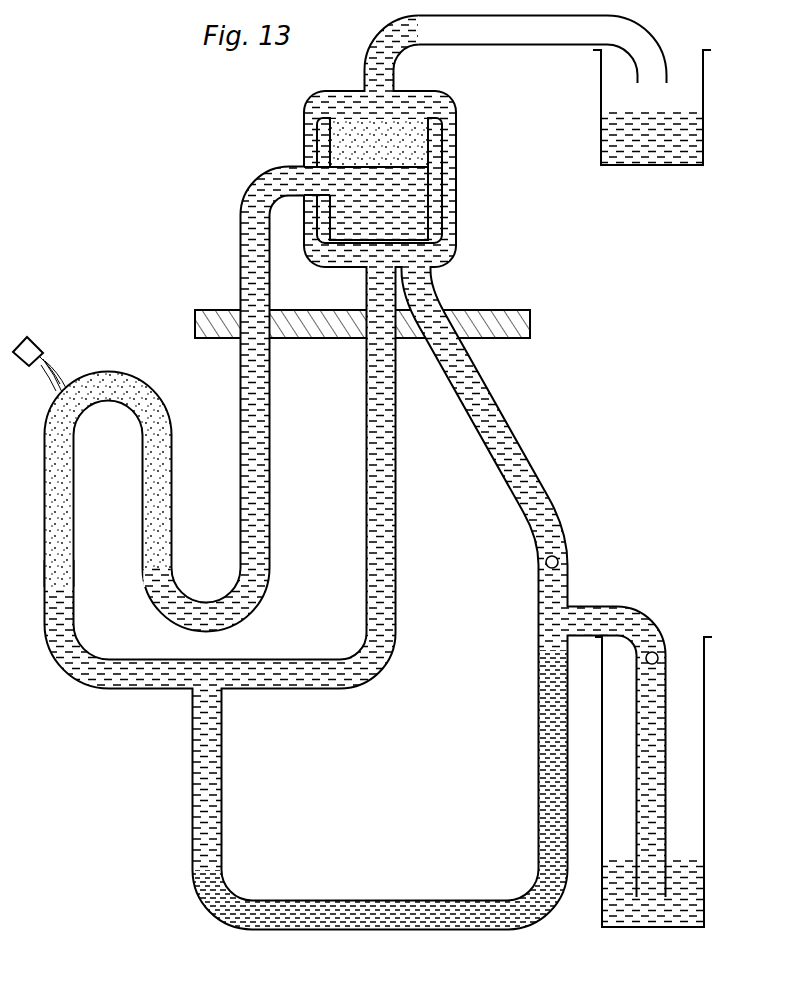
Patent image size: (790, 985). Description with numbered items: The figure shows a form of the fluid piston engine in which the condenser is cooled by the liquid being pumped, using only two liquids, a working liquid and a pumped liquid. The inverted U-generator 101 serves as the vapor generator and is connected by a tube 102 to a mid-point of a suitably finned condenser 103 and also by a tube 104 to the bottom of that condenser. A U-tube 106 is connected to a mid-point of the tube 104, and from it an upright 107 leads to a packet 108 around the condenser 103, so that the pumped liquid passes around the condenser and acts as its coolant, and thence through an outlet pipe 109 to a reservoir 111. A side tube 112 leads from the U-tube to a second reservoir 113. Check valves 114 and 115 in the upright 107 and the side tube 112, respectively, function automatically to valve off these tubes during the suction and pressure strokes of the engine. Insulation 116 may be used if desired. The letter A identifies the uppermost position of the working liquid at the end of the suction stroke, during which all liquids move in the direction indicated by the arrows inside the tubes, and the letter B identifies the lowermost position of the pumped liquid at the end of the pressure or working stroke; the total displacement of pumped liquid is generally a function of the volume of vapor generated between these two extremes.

The inverted U-generator 101 is at (72, 508).
The tube 102 is at (246, 249).
The finned condenser 103 is at (422, 181).
The tube 104 is at (305, 690).
The U-tube 106 is at (428, 930).
The upright 107 is at (550, 498).
The packet 108 is at (455, 203).
The outlet pipe 109 is at (518, 40).
The reservoir 111 is at (672, 167).
The side tube 112 is at (615, 608).
The reservoir 113 is at (705, 882).
The check valve 114 is at (559, 562).
The check valve 115 is at (659, 657).
The insulation 116 is at (487, 340).
The uppermost position of the working liquid A is at (227, 708).
The lowermost position of the pumped liquid B is at (222, 880).